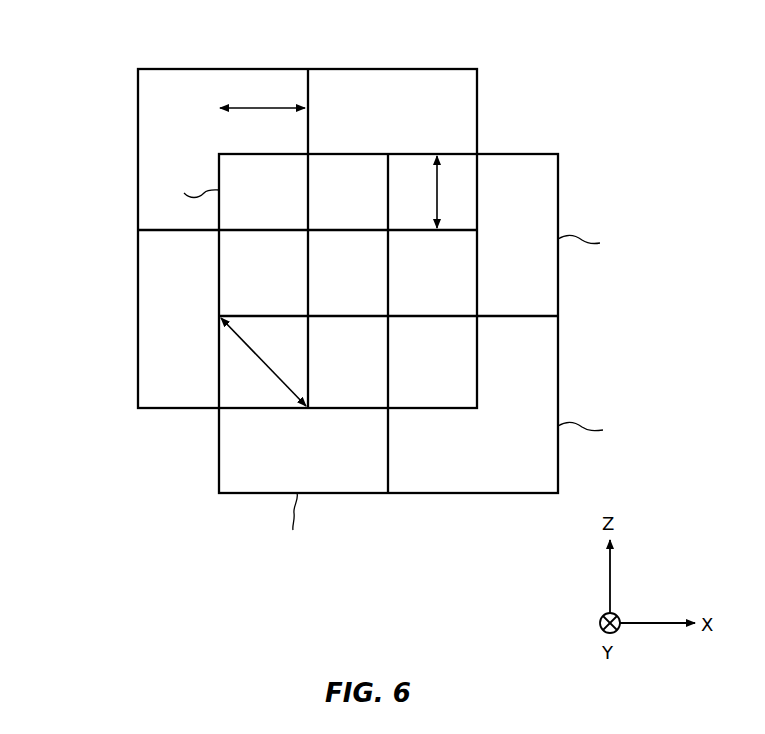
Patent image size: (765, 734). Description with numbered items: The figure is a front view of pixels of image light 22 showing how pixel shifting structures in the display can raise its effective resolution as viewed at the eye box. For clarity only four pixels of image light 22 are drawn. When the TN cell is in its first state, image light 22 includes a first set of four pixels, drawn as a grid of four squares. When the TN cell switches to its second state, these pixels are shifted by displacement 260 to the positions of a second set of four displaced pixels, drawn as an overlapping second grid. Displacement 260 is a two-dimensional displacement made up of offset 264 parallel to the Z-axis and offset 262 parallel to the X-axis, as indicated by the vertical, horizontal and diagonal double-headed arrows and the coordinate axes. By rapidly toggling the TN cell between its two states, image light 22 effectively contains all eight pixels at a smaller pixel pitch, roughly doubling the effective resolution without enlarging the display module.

The image light 22 is at (79, 348).
The displacement 260 is at (267, 368).
The offset 262 is at (267, 107).
The offset 264 is at (437, 183).